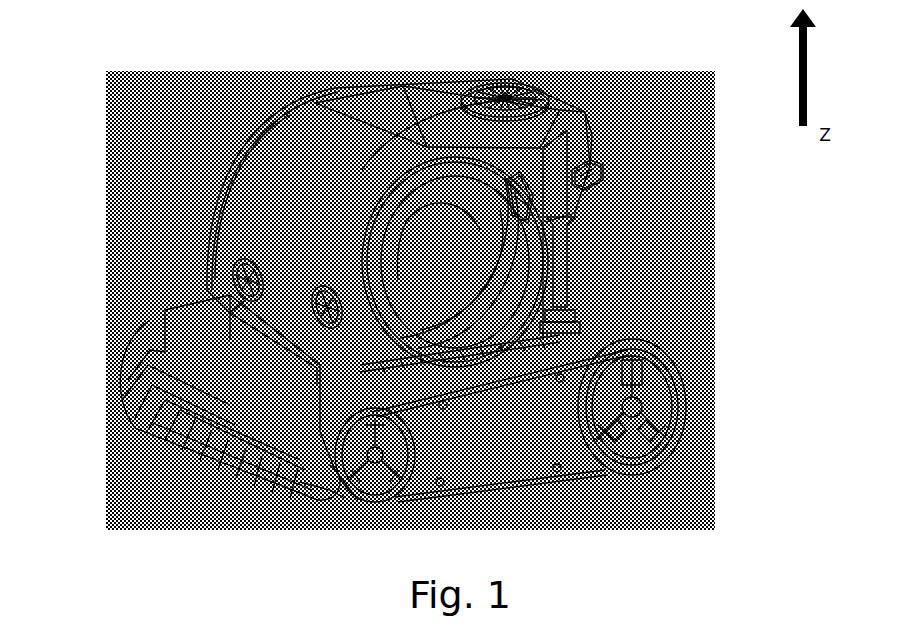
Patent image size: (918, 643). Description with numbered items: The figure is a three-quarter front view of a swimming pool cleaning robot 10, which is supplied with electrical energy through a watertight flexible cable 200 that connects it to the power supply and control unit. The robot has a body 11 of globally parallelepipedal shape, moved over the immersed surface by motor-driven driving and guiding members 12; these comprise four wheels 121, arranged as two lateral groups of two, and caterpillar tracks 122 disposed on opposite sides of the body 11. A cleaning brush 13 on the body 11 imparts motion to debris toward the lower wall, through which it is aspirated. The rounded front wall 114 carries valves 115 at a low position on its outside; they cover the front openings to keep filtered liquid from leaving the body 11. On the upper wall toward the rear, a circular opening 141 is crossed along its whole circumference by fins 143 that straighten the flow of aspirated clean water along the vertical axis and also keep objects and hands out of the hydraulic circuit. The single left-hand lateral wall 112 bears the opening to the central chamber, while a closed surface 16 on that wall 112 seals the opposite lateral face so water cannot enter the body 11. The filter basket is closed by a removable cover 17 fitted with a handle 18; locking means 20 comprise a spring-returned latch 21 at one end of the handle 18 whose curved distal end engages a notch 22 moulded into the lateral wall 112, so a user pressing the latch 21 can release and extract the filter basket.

The swimming pool cleaning robot 10 is at (175, 165).
The body 11 is at (340, 92).
The driving and guiding members 12 is at (698, 556).
The cleaning brush 13 is at (180, 448).
The closed surface 16 is at (240, 122).
The removable cover 17 is at (410, 237).
The handle 18 is at (300, 482).
The locking means 20 is at (798, 185).
The latch 21 is at (570, 217).
The notch 22 is at (603, 176).
The left-hand lateral wall 112 is at (566, 123).
The front wall 114 is at (265, 158).
The valves 115 is at (236, 296).
The wheels 121 is at (655, 465).
The caterpillar tracks 122 is at (690, 405).
The circular opening 141 is at (478, 82).
The fins 143 is at (508, 88).
The watertight flexible cable 200 is at (568, 305).